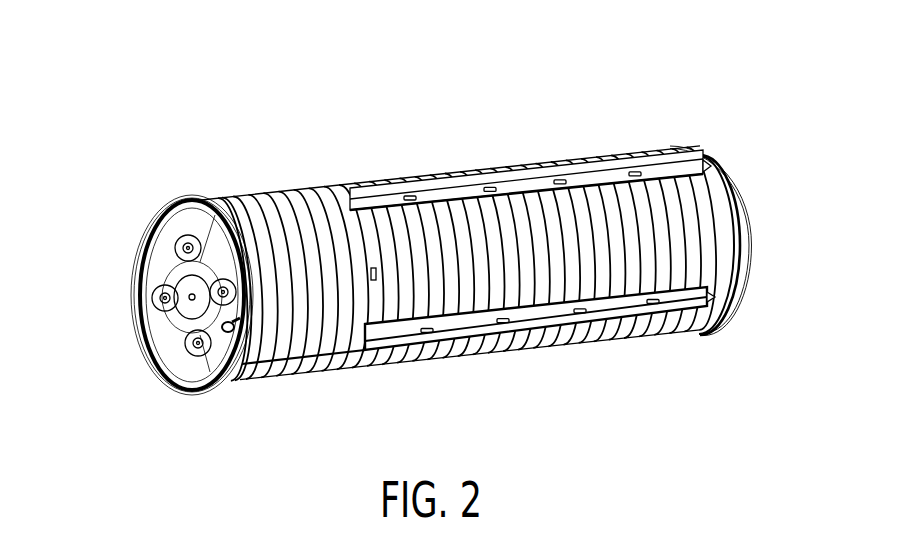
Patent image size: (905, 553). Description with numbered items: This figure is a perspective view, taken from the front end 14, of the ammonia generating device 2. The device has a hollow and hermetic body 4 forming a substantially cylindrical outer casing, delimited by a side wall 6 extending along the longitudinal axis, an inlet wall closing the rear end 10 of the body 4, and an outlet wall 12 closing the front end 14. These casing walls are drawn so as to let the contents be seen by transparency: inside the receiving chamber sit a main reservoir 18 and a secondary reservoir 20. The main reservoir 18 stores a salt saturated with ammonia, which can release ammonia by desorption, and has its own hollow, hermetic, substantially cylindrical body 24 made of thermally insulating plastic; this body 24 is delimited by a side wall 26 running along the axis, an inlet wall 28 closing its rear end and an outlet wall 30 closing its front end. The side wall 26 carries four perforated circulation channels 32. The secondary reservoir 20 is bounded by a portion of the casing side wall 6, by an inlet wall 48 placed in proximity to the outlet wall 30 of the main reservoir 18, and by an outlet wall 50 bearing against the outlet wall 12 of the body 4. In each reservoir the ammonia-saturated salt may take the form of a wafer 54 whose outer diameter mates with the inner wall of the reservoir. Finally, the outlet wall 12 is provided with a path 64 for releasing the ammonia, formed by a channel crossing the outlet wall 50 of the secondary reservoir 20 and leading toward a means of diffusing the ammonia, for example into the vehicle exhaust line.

The ammonia generating device 2 is at (711, 131).
The hollow and hermetic body 4 is at (502, 148).
The side wall 6 is at (606, 345).
The rear end 10 is at (755, 159).
The outlet wall 12 is at (130, 296).
The front end 14 is at (128, 362).
The main reservoir 18 is at (430, 262).
The secondary reservoir 20 is at (300, 373).
The hollow and hermetic body 24 is at (690, 283).
The side wall 26 is at (580, 218).
The inlet wall 28 is at (751, 239).
The outlet wall 30 is at (349, 188).
The perforated circulation channels 32 is at (497, 323).
The inlet wall 48 is at (337, 373).
The outlet wall 50 is at (243, 372).
The wafer 54 is at (556, 284).
The path for releasing the ammonia 64 is at (208, 363).